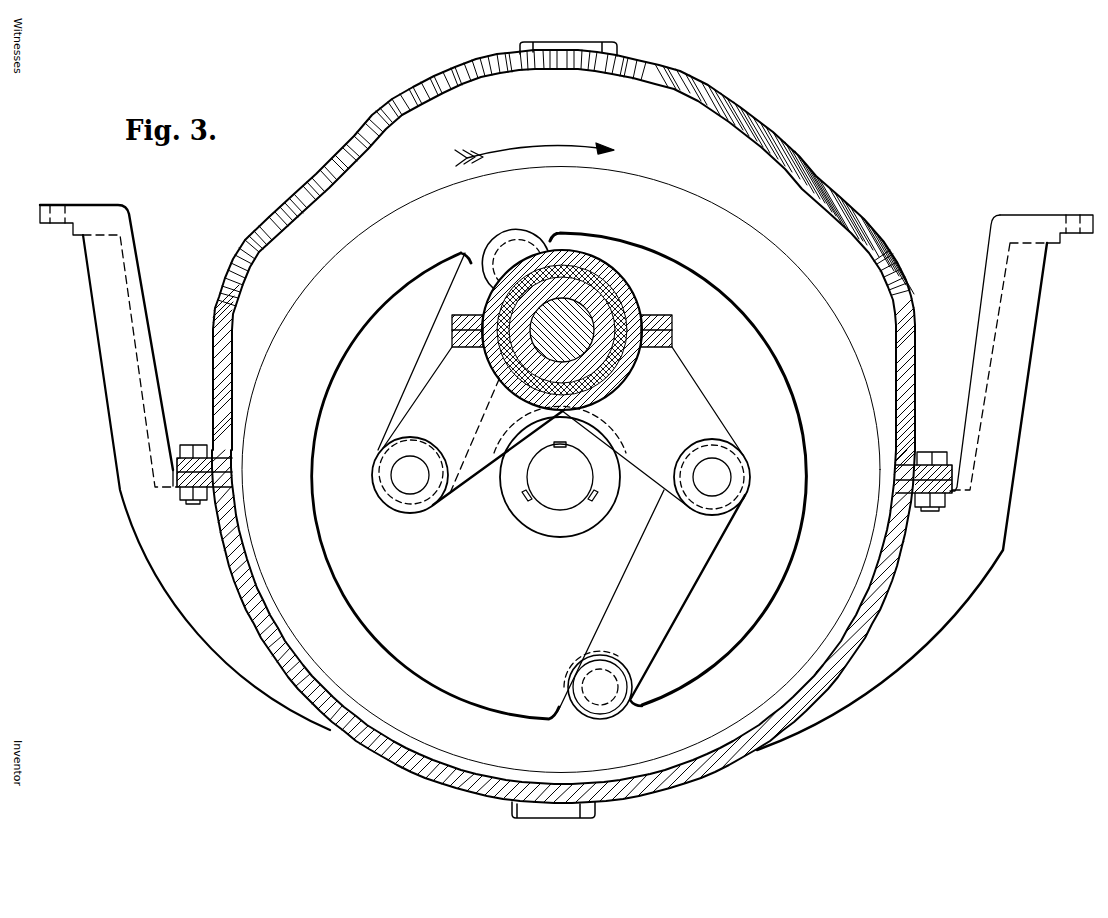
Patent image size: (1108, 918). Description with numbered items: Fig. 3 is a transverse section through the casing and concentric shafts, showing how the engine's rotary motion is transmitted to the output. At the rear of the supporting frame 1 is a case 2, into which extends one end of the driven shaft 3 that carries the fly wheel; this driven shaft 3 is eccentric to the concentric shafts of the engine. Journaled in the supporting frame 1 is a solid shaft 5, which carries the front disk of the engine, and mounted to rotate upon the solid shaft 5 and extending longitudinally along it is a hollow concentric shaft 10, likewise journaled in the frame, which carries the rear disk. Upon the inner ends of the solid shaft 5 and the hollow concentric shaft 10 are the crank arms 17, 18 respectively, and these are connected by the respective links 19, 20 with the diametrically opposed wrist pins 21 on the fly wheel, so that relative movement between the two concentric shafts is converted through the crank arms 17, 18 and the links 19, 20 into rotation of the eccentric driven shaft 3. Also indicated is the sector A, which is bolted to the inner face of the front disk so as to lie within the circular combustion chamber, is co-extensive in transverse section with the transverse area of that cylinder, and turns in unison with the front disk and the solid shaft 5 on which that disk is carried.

The supporting frame 1 is at (112, 205).
The case 2 is at (345, 141).
The driven shaft 3 is at (562, 498).
The solid shaft 5 is at (575, 305).
The hollow concentric shaft 10 is at (603, 317).
The crank arm 17 is at (694, 396).
The crank arm 18 is at (481, 462).
The link 19 is at (680, 604).
The link 20 is at (432, 338).
The wrist pin 21 is at (507, 240).
The sector A is at (762, 245).